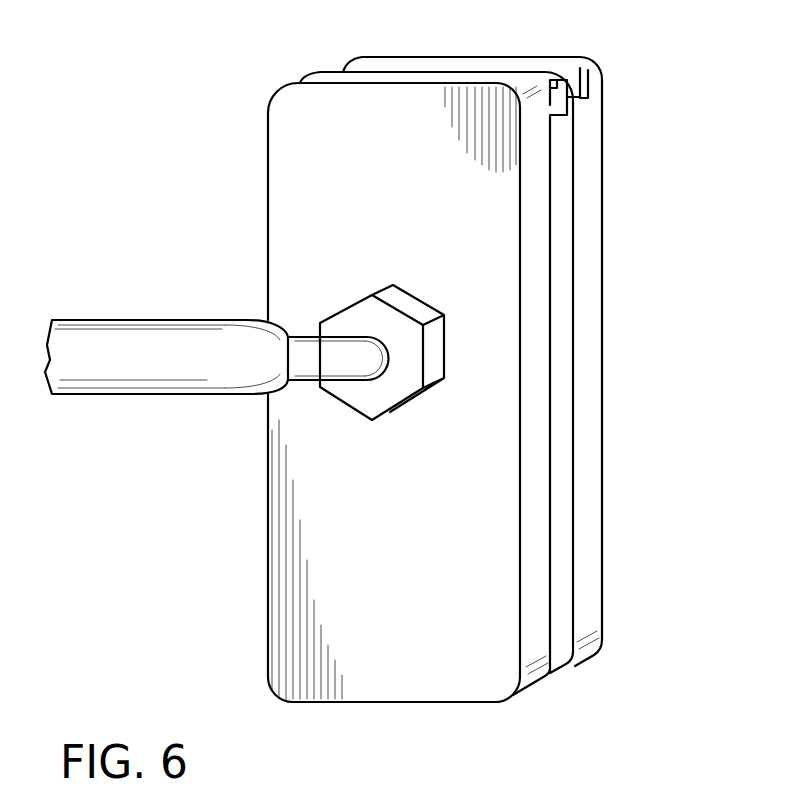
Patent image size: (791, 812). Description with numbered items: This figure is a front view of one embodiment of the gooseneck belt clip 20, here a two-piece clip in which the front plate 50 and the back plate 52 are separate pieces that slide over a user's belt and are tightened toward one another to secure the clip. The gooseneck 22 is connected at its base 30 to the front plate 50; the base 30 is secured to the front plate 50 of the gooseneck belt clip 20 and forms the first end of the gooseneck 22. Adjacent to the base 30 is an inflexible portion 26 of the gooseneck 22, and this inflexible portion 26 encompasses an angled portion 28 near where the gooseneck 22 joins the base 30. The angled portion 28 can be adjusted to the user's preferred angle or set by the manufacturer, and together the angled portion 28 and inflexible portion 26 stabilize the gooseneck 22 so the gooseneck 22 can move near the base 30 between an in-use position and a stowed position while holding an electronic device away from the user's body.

The gooseneck belt clip 20 is at (652, 93).
The gooseneck 22 is at (165, 328).
The inflexible portion 26 is at (320, 363).
The angled portion 28 is at (355, 365).
The base 30 is at (415, 353).
The front plate 50 is at (407, 675).
The back plate 52 is at (593, 608).